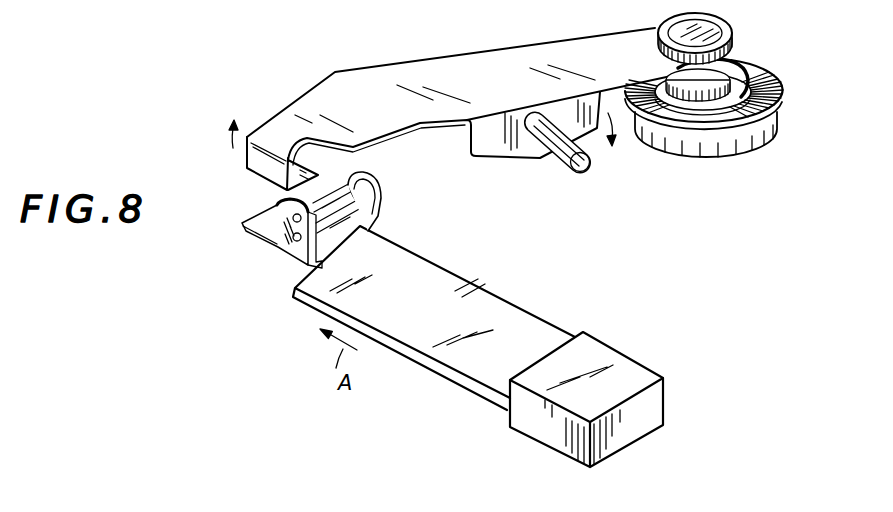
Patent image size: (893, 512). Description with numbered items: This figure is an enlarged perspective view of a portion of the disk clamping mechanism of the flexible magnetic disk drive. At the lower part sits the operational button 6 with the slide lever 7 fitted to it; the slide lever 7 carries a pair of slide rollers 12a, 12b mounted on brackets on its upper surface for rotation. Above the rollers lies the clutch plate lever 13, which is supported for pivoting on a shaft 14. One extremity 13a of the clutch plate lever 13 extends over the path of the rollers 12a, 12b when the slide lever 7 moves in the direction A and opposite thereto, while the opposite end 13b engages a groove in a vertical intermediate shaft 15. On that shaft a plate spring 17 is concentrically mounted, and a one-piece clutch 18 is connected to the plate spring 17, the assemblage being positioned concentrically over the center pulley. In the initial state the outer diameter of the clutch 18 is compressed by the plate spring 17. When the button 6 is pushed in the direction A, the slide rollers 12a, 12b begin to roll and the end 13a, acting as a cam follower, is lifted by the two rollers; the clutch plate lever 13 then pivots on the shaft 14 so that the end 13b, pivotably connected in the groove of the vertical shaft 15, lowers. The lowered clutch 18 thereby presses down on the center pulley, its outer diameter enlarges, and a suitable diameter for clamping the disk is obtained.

The operational button 6 is at (620, 433).
The slide lever 7 is at (465, 357).
The slide roller 12a is at (353, 230).
The slide roller 12b is at (365, 197).
The clutch plate lever 13 is at (436, 109).
The extremity of clutch plate lever 13a is at (263, 168).
The opposite end of clutch plate lever 13b is at (735, 61).
The shaft 14 is at (560, 166).
The vertical intermediate shaft 15 is at (732, 32).
The plate spring 17 is at (762, 87).
The one-piece clutch 18 is at (776, 117).